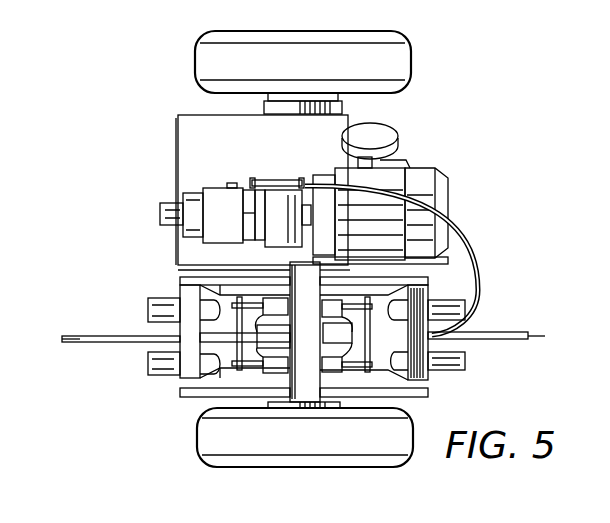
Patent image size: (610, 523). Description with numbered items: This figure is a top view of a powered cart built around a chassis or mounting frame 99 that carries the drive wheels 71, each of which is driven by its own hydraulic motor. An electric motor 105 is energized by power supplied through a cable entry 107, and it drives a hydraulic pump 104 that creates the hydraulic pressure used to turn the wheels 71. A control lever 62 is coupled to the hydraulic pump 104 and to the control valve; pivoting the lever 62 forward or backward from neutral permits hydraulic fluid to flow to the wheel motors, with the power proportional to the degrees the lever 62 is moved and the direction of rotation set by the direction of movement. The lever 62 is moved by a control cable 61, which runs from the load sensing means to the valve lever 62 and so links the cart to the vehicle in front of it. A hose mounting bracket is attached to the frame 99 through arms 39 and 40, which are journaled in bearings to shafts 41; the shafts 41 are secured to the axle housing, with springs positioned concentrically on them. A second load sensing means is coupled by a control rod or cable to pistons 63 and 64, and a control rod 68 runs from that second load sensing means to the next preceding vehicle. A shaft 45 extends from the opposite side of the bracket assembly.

The drive wheels 71 is at (199, 62).
The mounting frame 99 is at (180, 130).
The control lever 62 is at (232, 182).
The cable entry 107 is at (388, 130).
The electric motor 105 is at (437, 176).
The control cable 61 is at (462, 224).
The hydraulic pump 104 is at (218, 233).
The arm 40 is at (186, 288).
The shafts 41 is at (148, 307).
The control rod 68 is at (124, 337).
The piston 63 is at (261, 335).
The piston 64 is at (347, 334).
The arm 39 is at (428, 292).
The right axle shaft 45 is at (480, 332).